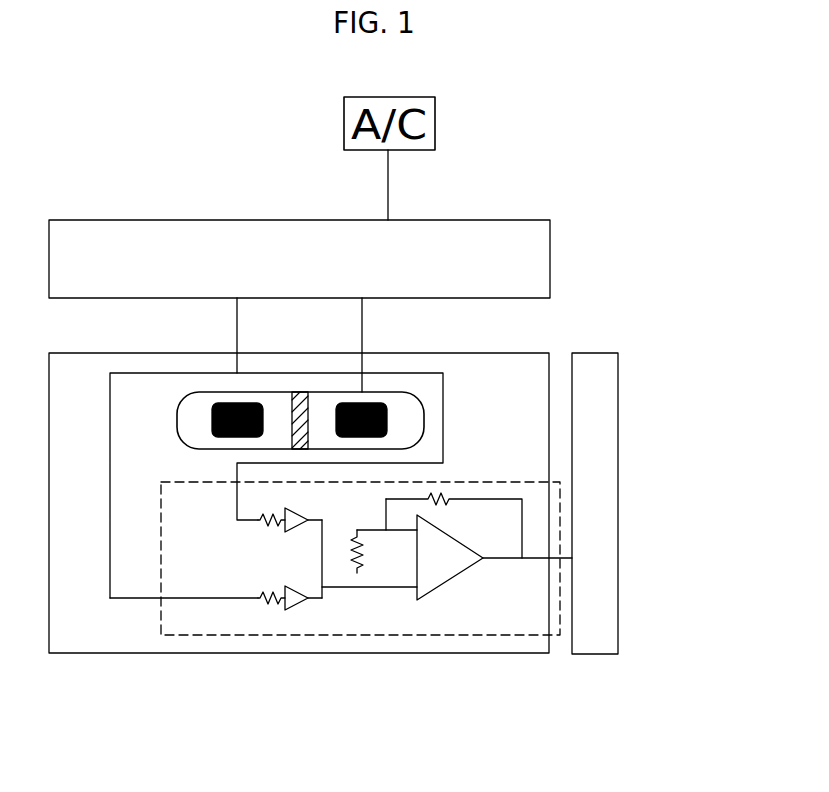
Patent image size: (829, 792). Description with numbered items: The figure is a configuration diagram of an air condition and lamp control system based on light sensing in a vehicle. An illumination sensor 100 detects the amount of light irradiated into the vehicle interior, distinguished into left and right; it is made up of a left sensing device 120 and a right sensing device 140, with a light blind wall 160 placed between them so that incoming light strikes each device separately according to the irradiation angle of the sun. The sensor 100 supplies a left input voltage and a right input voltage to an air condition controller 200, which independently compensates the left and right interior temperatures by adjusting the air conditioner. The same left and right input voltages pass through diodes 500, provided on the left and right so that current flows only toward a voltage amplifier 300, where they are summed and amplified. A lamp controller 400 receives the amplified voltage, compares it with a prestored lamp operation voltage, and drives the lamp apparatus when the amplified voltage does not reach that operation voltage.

The illumination sensor 100 is at (283, 279).
The left sensing device 120 is at (225, 402).
The right sensing device 140 is at (345, 402).
The light blind wall 160 is at (300, 392).
The air condition controller 200 is at (507, 220).
The voltage amplifier 300 is at (307, 636).
The lamp controller 400 is at (612, 447).
The diodes 500 is at (300, 518).